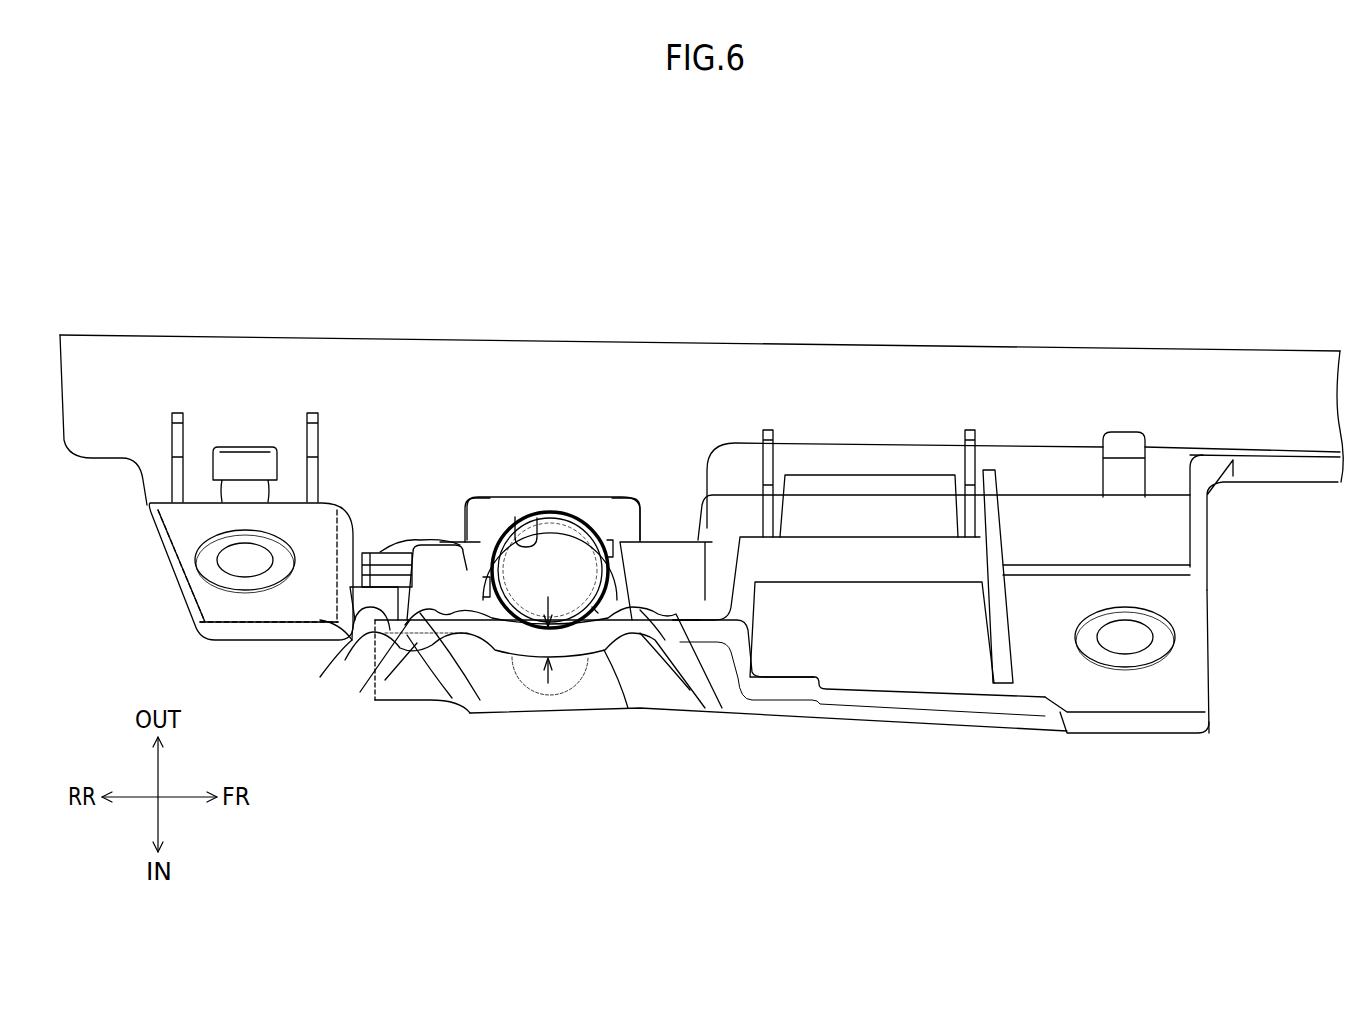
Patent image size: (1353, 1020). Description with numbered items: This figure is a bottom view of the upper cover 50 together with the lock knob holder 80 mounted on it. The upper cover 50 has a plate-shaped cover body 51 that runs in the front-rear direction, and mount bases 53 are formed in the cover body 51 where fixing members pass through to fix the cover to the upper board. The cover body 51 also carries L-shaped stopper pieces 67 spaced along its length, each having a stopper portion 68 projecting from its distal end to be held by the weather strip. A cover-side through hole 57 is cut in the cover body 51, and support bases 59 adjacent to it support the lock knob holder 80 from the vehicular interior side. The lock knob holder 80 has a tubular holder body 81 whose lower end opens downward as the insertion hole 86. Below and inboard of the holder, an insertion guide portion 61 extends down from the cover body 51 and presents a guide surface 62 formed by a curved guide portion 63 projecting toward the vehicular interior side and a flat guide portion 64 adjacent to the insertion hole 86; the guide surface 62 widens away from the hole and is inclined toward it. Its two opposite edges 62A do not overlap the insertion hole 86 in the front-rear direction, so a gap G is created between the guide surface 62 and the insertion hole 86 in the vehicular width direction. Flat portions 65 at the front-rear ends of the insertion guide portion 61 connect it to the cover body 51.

The upper cover 50 is at (1187, 322).
The cover body 51 is at (982, 370).
The mount base 53 is at (208, 604).
The cover-side through hole 57 is at (657, 628).
The support base 59 is at (657, 565).
The insertion guide portion 61 is at (445, 697).
The guide surface 62 is at (535, 722).
The opposite edges 62A is at (373, 660).
The curved guide portion 63 is at (493, 690).
The flat guide portion 64 is at (530, 690).
The flat portion 65 is at (352, 615).
The stopper piece 67 is at (829, 505).
The stopper portion 68 is at (897, 483).
The lock knob holder 80 is at (552, 488).
The holder body 81 is at (482, 578).
The insertion hole 86 is at (522, 545).
The gap G is at (553, 643).